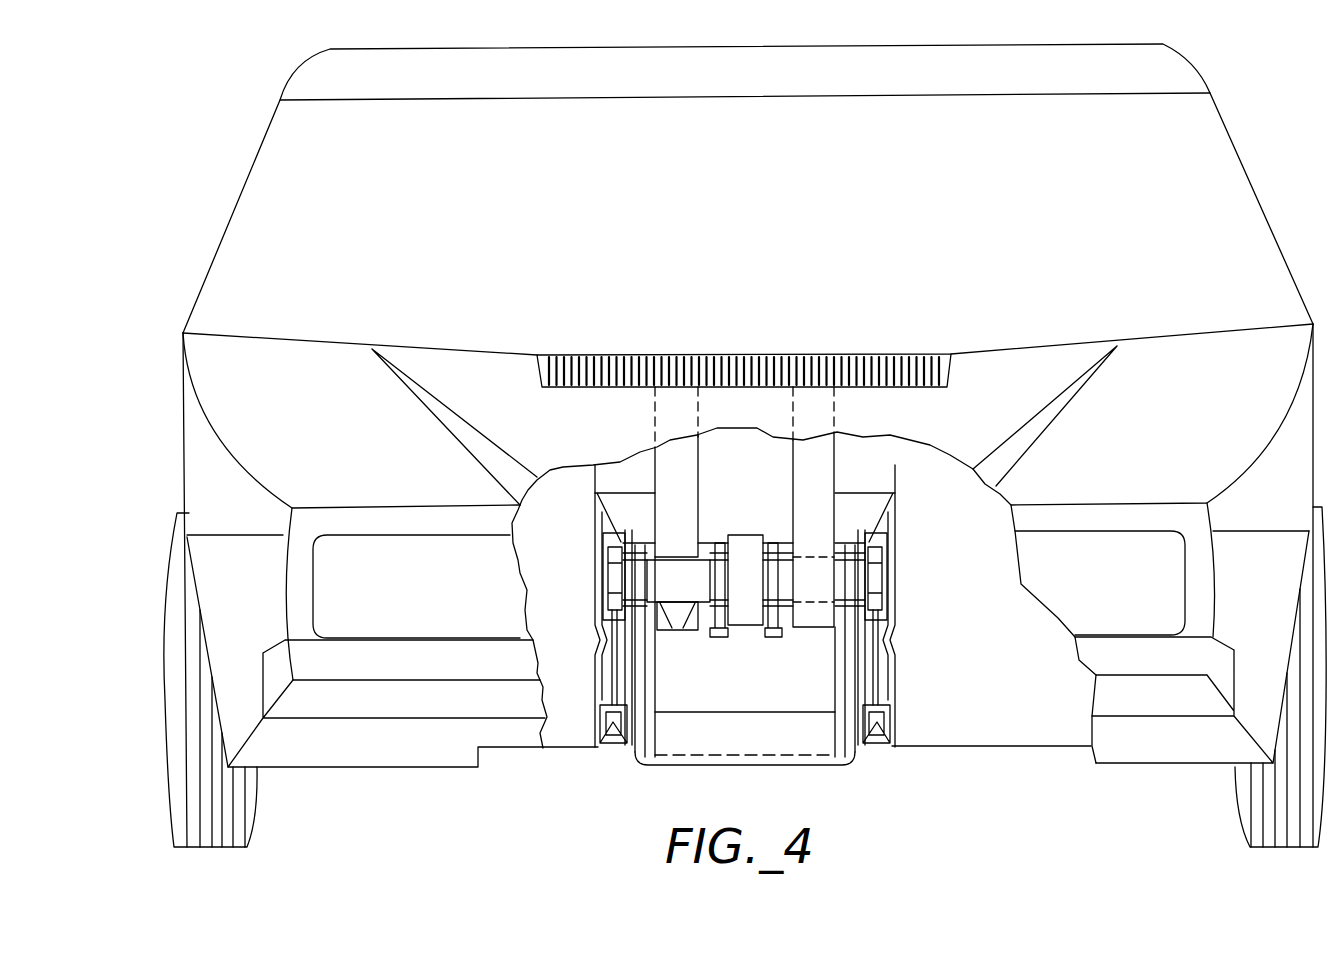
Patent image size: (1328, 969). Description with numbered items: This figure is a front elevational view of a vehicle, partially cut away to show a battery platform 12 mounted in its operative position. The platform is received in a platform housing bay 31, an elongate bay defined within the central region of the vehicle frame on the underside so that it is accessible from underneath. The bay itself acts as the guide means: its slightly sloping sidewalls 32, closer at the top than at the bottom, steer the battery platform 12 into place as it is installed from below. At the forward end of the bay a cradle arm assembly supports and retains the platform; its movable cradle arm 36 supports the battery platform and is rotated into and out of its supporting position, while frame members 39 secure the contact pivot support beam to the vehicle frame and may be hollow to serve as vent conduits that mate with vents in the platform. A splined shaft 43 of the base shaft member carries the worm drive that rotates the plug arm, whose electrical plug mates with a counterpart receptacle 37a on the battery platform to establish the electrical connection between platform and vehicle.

The battery platform 12 is at (794, 728).
The platform housing bay 31 is at (628, 764).
The sloping sidewalls 32 is at (607, 683).
The cradle arm 36 is at (680, 767).
The receptacle 37a is at (723, 640).
The frame members 39 is at (753, 625).
The splined shaft 43 is at (667, 625).